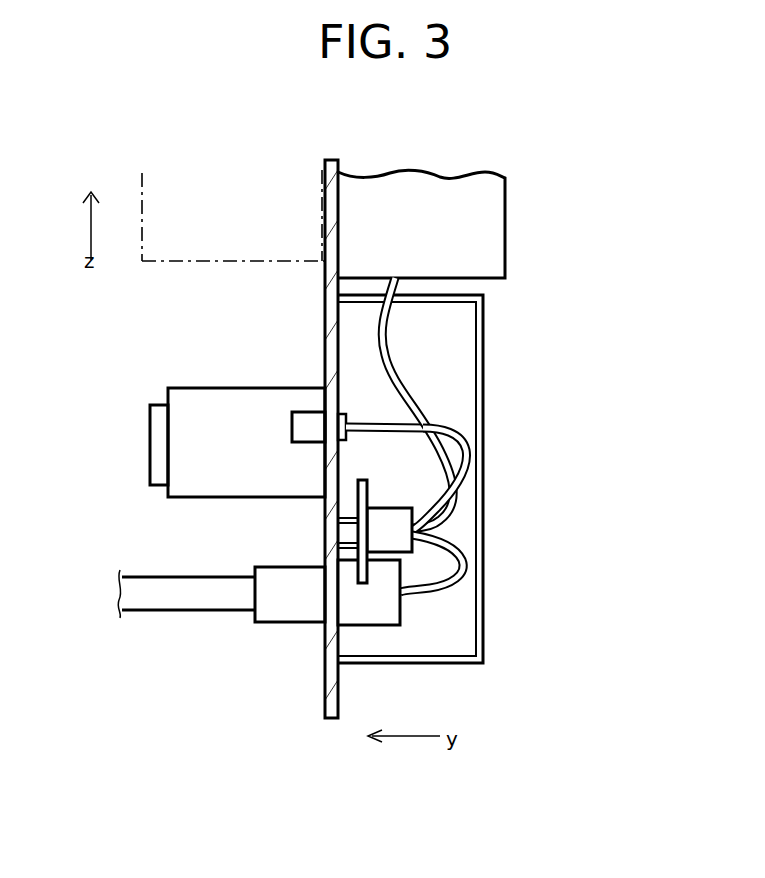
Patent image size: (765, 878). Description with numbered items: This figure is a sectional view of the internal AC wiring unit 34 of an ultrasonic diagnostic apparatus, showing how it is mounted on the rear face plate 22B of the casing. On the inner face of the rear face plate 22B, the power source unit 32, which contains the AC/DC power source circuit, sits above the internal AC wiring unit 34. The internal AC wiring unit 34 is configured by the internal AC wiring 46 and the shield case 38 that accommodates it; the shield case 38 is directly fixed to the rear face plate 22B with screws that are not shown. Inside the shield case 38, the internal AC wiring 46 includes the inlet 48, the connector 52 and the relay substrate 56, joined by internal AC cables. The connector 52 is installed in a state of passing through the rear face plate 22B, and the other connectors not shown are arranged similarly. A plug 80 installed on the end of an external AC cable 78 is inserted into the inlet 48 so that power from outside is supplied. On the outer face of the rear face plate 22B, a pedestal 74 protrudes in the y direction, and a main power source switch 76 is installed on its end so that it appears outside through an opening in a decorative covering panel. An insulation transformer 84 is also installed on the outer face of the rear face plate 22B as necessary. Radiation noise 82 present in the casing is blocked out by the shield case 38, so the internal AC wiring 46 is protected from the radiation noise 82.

The rear face plate 22B is at (325, 675).
The power source unit 32 is at (505, 212).
The internal AC wiring unit 34 is at (492, 456).
The shield case 38 is at (483, 516).
The internal AC wiring 46 is at (442, 410).
The inlet 48 is at (400, 600).
The connector 52 is at (308, 412).
The relay substrate 56 is at (364, 492).
The pedestal 74 is at (232, 388).
The main power source switch 76 is at (150, 450).
The external AC cable 78 is at (180, 577).
The plug 80 is at (282, 567).
The radiation noise 82 is at (492, 350).
The insulation transformer 84 is at (248, 218).